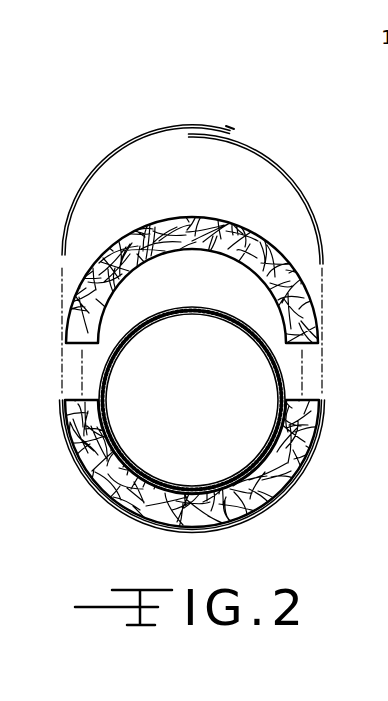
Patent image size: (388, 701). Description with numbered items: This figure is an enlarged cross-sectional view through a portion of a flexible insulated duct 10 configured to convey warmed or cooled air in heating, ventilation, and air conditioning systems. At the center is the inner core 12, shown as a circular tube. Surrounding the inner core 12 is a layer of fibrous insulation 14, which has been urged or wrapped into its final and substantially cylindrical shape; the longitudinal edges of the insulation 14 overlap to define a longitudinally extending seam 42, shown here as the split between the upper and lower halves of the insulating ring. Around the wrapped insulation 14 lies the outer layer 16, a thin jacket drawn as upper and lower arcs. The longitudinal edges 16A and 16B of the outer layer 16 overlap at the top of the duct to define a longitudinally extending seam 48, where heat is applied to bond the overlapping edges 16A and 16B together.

The flexible insulated duct 10 is at (110, 118).
The inner core 12 is at (288, 376).
The layer of fibrous insulation 14 is at (320, 425).
The outer layer 16 is at (296, 482).
The longitudinal edge of the outer layer 16A is at (233, 125).
The longitudinal edge of the outer layer 16B is at (189, 136).
The longitudinally extending seam 42 is at (184, 216).
The longitudinally extending seam 48 is at (206, 123).